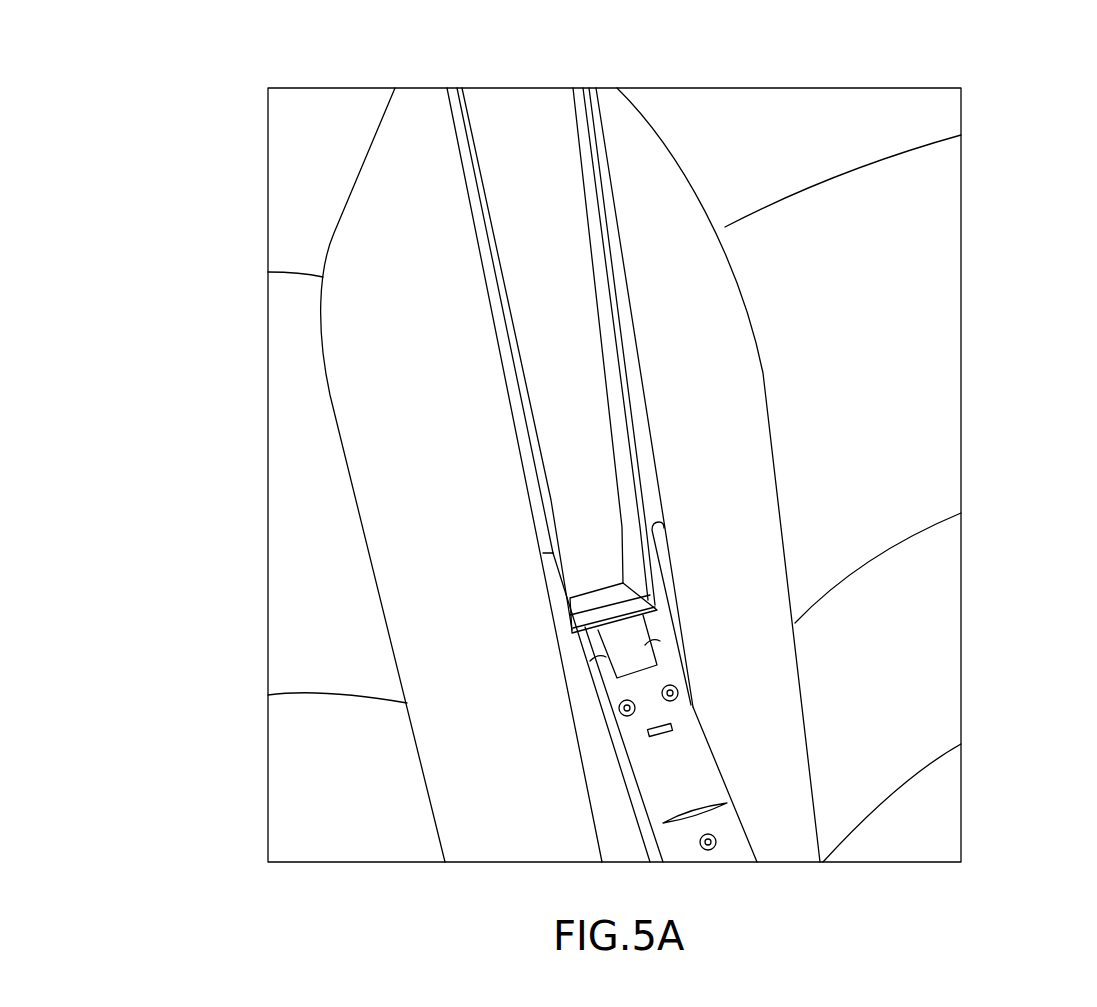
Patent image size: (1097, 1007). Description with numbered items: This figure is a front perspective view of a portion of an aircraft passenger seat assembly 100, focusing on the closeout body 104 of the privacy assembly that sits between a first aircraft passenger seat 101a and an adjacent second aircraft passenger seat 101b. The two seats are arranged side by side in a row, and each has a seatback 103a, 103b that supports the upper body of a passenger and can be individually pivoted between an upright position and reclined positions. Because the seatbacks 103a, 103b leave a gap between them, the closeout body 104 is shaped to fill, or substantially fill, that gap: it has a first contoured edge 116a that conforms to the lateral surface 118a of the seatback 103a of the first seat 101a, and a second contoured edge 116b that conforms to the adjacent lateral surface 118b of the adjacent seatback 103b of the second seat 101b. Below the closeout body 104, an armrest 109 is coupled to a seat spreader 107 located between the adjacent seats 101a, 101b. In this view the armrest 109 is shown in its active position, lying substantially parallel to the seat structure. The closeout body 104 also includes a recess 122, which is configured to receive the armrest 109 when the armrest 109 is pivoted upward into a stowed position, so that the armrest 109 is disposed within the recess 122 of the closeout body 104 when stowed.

The aircraft passenger seat assembly 100 is at (212, 62).
The first aircraft passenger seat 101a is at (223, 152).
The second aircraft passenger seat 101b is at (985, 96).
The seatback 103a is at (318, 530).
The adjacent seatback 103b is at (940, 473).
The closeout body 104 is at (580, 113).
The seat spreader 107 is at (630, 657).
The armrest 109 is at (663, 822).
The first contoured edge 116a is at (480, 160).
The second contoured edge 116b is at (583, 147).
The lateral surface 118a is at (498, 317).
The adjacent lateral surface 118b is at (620, 323).
The recess 122 is at (580, 478).